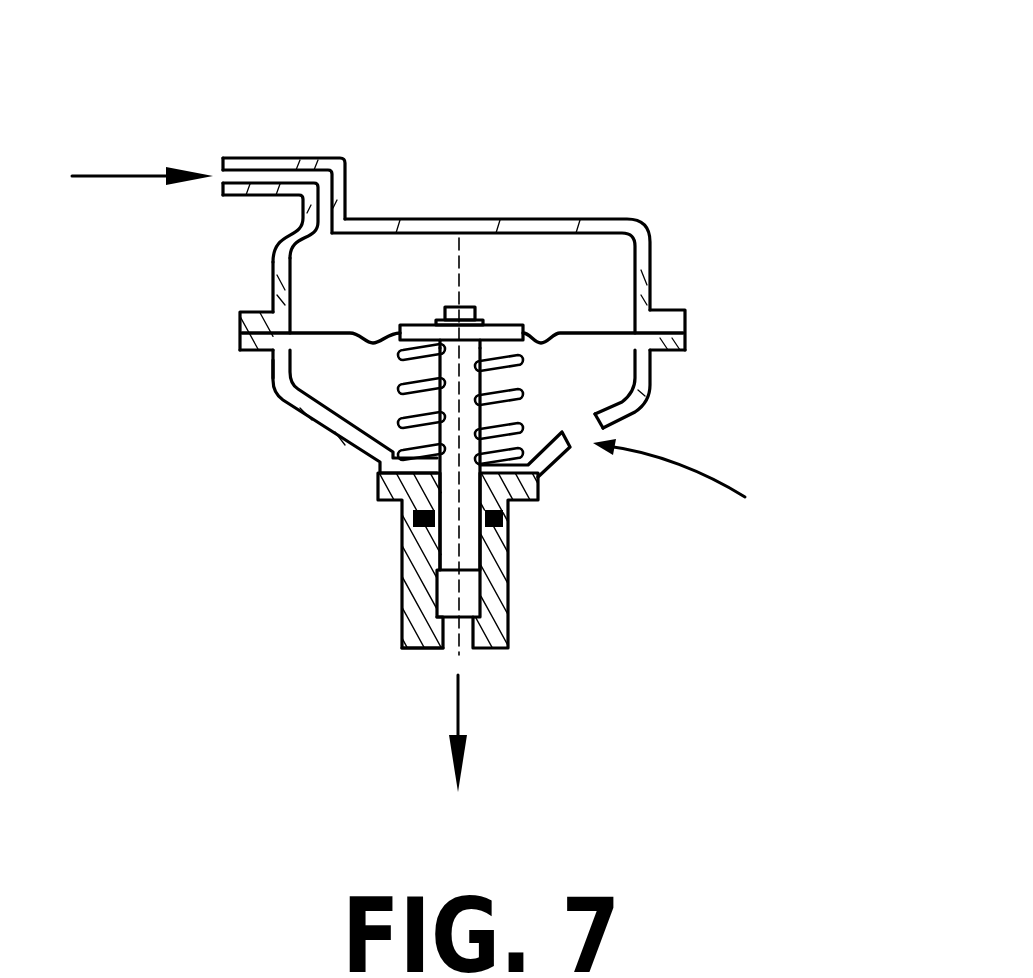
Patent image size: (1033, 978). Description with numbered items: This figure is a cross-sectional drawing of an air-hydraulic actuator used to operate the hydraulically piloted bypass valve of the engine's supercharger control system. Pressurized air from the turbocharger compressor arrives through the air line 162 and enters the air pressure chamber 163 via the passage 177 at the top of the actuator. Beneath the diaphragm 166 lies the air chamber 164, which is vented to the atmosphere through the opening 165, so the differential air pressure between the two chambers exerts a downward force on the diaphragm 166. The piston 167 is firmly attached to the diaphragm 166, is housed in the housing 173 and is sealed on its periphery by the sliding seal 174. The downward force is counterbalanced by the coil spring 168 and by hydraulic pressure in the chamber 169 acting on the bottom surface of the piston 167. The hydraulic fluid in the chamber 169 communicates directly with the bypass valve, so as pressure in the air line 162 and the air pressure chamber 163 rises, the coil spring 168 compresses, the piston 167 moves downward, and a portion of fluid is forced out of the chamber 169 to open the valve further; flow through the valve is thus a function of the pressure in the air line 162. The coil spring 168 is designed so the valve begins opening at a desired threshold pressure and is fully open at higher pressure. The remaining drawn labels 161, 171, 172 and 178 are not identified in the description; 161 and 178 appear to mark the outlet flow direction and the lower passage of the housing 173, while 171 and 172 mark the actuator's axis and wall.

The outlet flow direction 161 is at (460, 702).
The air line 162 is at (122, 176).
The air pressure chamber 163 is at (600, 262).
The air chamber 164 is at (610, 375).
The opening 165 is at (654, 478).
The diaphragm 166 is at (603, 327).
The piston 167 is at (443, 543).
The coil spring 168 is at (412, 411).
The hydraulic chamber 169 is at (470, 597).
The central axis 171 is at (453, 220).
The housing wall 172 is at (274, 372).
The housing 173 is at (400, 646).
The sliding seal 174 is at (417, 518).
The passage 177 is at (272, 178).
The outlet passage 178 is at (467, 635).